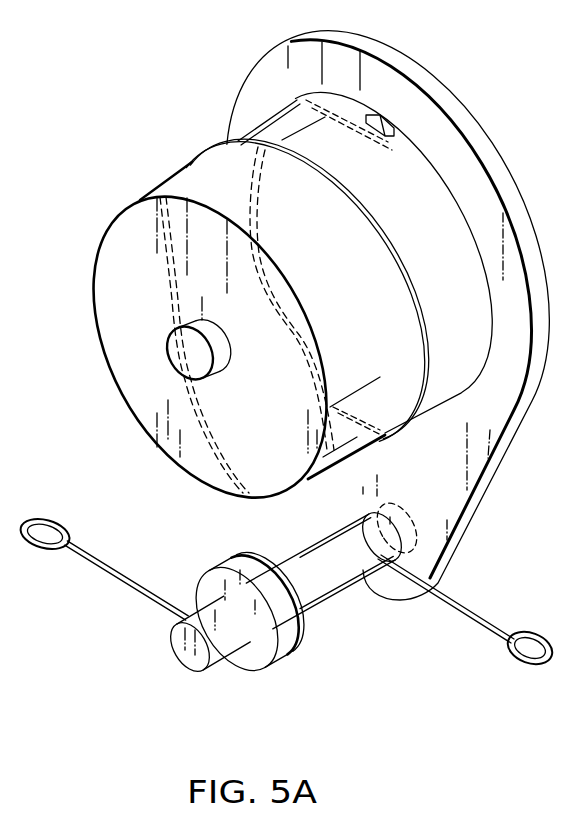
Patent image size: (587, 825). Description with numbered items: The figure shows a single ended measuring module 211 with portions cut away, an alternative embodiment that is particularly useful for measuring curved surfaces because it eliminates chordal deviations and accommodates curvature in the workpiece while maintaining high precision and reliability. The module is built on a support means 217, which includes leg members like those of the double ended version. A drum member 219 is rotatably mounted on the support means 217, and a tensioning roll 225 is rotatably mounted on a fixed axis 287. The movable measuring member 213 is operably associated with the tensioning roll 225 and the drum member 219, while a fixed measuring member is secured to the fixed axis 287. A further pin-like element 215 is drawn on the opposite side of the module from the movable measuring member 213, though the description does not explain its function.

The single ended measuring module 211 is at (505, 148).
The movable measuring member 213 is at (110, 580).
The retaining pin 215 is at (460, 607).
The support means 217 is at (388, 58).
The drum member 219 is at (117, 300).
The tensioning roll 225 is at (265, 653).
The fixed axis 287 is at (192, 662).